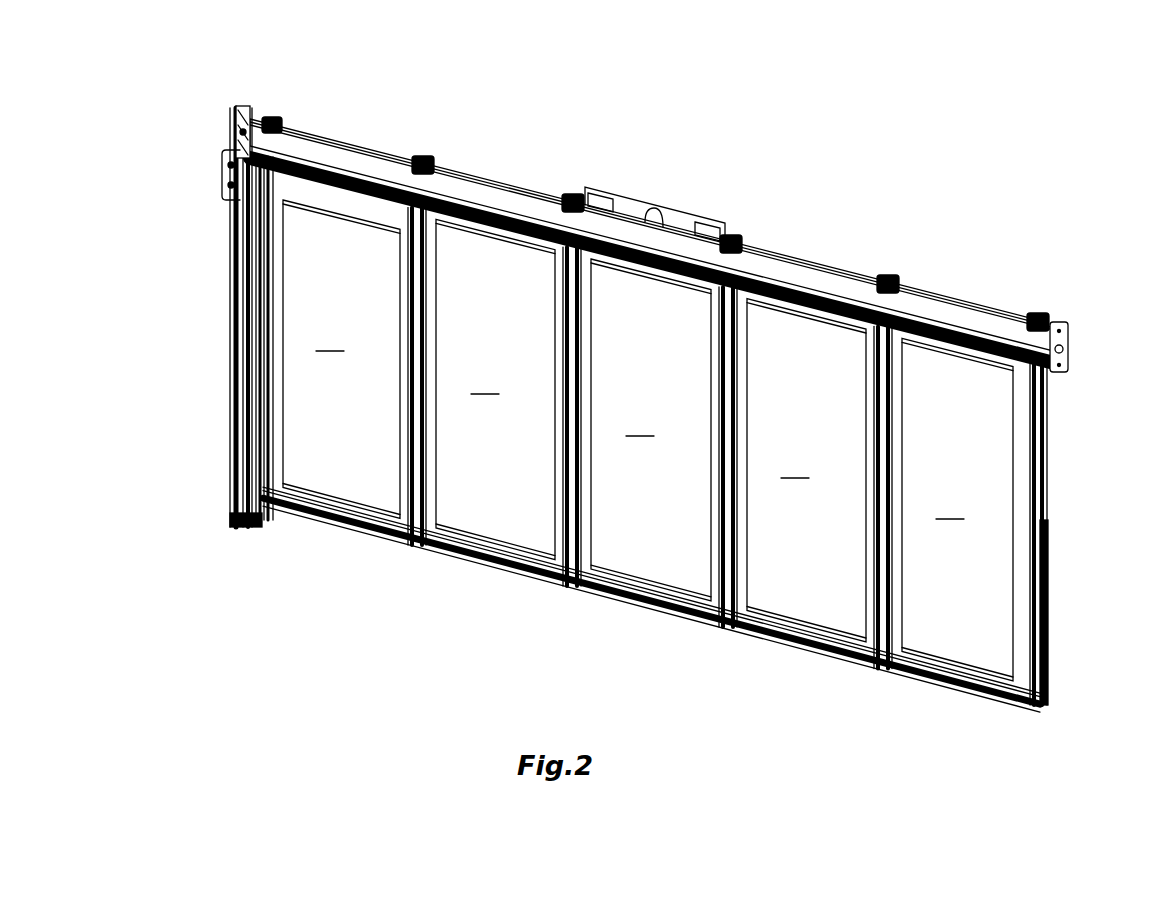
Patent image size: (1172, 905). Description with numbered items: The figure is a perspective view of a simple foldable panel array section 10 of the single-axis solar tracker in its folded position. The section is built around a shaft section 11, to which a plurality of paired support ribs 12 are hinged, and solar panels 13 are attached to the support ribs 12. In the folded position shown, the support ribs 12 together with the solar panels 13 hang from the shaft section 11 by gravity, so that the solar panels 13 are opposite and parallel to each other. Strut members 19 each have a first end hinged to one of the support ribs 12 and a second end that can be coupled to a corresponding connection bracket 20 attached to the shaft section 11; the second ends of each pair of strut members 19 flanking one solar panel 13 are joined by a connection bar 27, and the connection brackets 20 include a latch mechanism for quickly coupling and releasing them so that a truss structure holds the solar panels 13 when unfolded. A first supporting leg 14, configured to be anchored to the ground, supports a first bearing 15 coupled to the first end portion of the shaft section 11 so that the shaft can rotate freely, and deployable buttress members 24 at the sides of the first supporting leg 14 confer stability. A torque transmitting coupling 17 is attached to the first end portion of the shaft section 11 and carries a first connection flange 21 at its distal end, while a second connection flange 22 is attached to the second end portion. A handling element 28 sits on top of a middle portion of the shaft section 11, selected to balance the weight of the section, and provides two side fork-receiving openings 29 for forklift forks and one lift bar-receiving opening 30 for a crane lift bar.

The simple foldable panel array section 10 is at (812, 160).
The shaft section 11 is at (805, 282).
The support ribs 12 is at (409, 438).
The solar panels 13 is at (648, 440).
The first supporting leg 14 is at (240, 373).
The first bearing 15 is at (234, 136).
The torque transmitting coupling 17 is at (241, 131).
The strut members 19 is at (260, 470).
The connection brackets 20 is at (273, 117).
The first connection flange 21 is at (247, 116).
The second connection flange 22 is at (1068, 340).
The deployable buttress members 24 is at (237, 340).
The connection bar 27 is at (284, 502).
The handling element 28 is at (690, 215).
The side fork-receiving openings 29 is at (603, 195).
The lift bar-receiving opening 30 is at (655, 210).